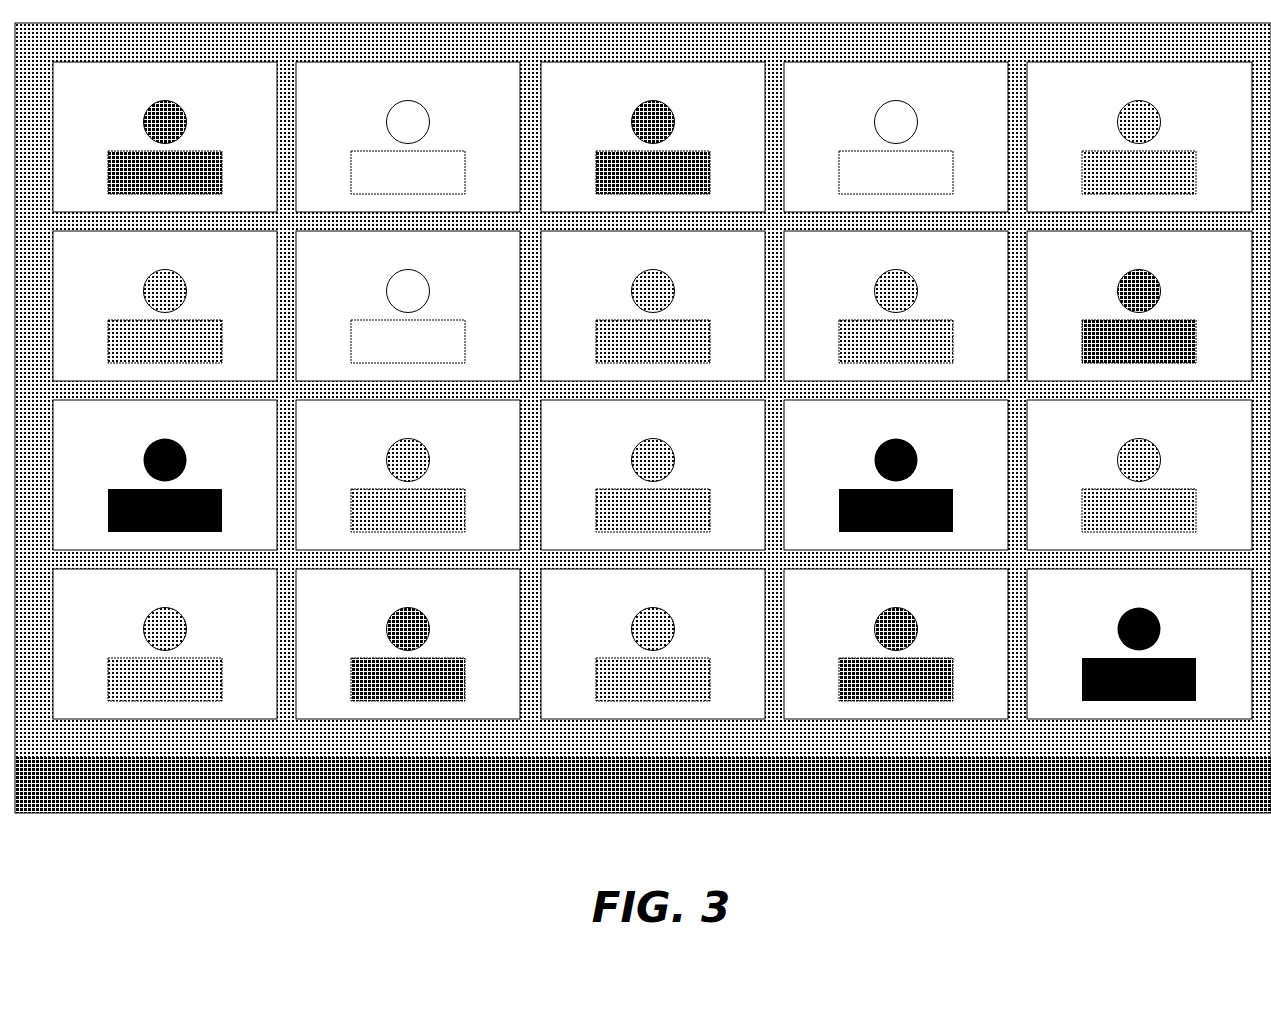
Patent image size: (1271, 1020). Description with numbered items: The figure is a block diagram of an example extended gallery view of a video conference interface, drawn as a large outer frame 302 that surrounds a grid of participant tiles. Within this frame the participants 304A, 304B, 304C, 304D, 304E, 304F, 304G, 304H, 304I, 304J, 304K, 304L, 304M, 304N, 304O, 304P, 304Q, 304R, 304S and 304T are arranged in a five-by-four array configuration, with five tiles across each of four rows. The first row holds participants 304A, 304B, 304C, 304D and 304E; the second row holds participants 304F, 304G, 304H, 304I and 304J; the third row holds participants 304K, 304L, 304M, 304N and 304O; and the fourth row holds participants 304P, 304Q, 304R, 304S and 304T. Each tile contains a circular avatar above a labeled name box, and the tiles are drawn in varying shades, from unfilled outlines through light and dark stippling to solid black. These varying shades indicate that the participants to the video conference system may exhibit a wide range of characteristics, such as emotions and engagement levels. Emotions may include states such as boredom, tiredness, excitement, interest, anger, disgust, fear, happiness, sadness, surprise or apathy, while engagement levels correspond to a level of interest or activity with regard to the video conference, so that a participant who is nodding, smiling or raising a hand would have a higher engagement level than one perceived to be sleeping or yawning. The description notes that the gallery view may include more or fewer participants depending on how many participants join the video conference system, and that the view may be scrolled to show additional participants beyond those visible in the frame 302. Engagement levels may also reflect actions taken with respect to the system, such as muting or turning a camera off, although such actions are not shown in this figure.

The user interface display 302 is at (643, 418).
The participant 304A is at (165, 137).
The participant 304B is at (408, 137).
The participant 304C is at (653, 137).
The participant 304D is at (896, 137).
The participant 304E is at (1139, 137).
The participant 304F is at (165, 306).
The participant 304G is at (408, 306).
The participant 304H is at (653, 306).
The participant 304I is at (896, 306).
The participant 304J is at (1139, 306).
The participant 304K is at (165, 475).
The participant 304L is at (408, 475).
The participant 304M is at (653, 475).
The participant 304N is at (896, 475).
The participant 304O is at (1139, 475).
The participant 304P is at (165, 644).
The participant 304Q is at (408, 644).
The participant 304R is at (653, 644).
The participant 304S is at (896, 644).
The participant 304T is at (1139, 644).